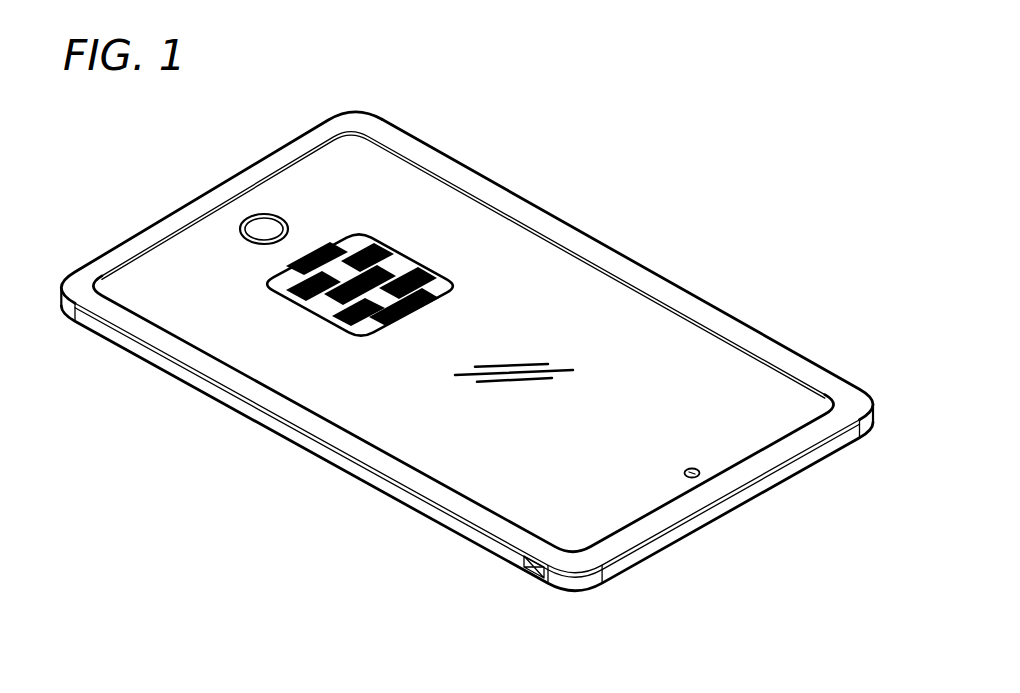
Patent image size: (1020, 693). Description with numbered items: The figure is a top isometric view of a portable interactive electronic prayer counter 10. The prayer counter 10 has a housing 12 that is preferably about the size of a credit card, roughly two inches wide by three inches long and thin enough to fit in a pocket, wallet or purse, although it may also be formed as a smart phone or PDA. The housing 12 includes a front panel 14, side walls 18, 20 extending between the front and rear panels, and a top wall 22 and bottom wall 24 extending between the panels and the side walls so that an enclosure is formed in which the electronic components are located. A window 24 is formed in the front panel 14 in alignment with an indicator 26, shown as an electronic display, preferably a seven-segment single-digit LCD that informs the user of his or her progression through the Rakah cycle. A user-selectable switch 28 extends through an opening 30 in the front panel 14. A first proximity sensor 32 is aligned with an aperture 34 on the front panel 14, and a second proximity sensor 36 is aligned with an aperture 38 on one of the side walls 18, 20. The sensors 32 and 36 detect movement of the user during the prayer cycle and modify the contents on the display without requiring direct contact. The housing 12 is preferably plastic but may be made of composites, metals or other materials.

The portable interactive electronic prayer counter 10 is at (582, 64).
The housing 12 is at (187, 388).
The front panel 14 is at (577, 293).
The side wall 18 is at (330, 460).
The side wall 20 is at (740, 317).
The top wall 22 is at (188, 200).
The bottom wall 24 is at (423, 257).
The indicator 26 is at (370, 240).
The user-selectable switch 28 is at (268, 226).
The opening 30 is at (143, 253).
The first proximity sensor 32 is at (705, 467).
The aperture 34 is at (692, 468).
The second proximity sensor 36 is at (517, 568).
The aperture 38 is at (533, 568).